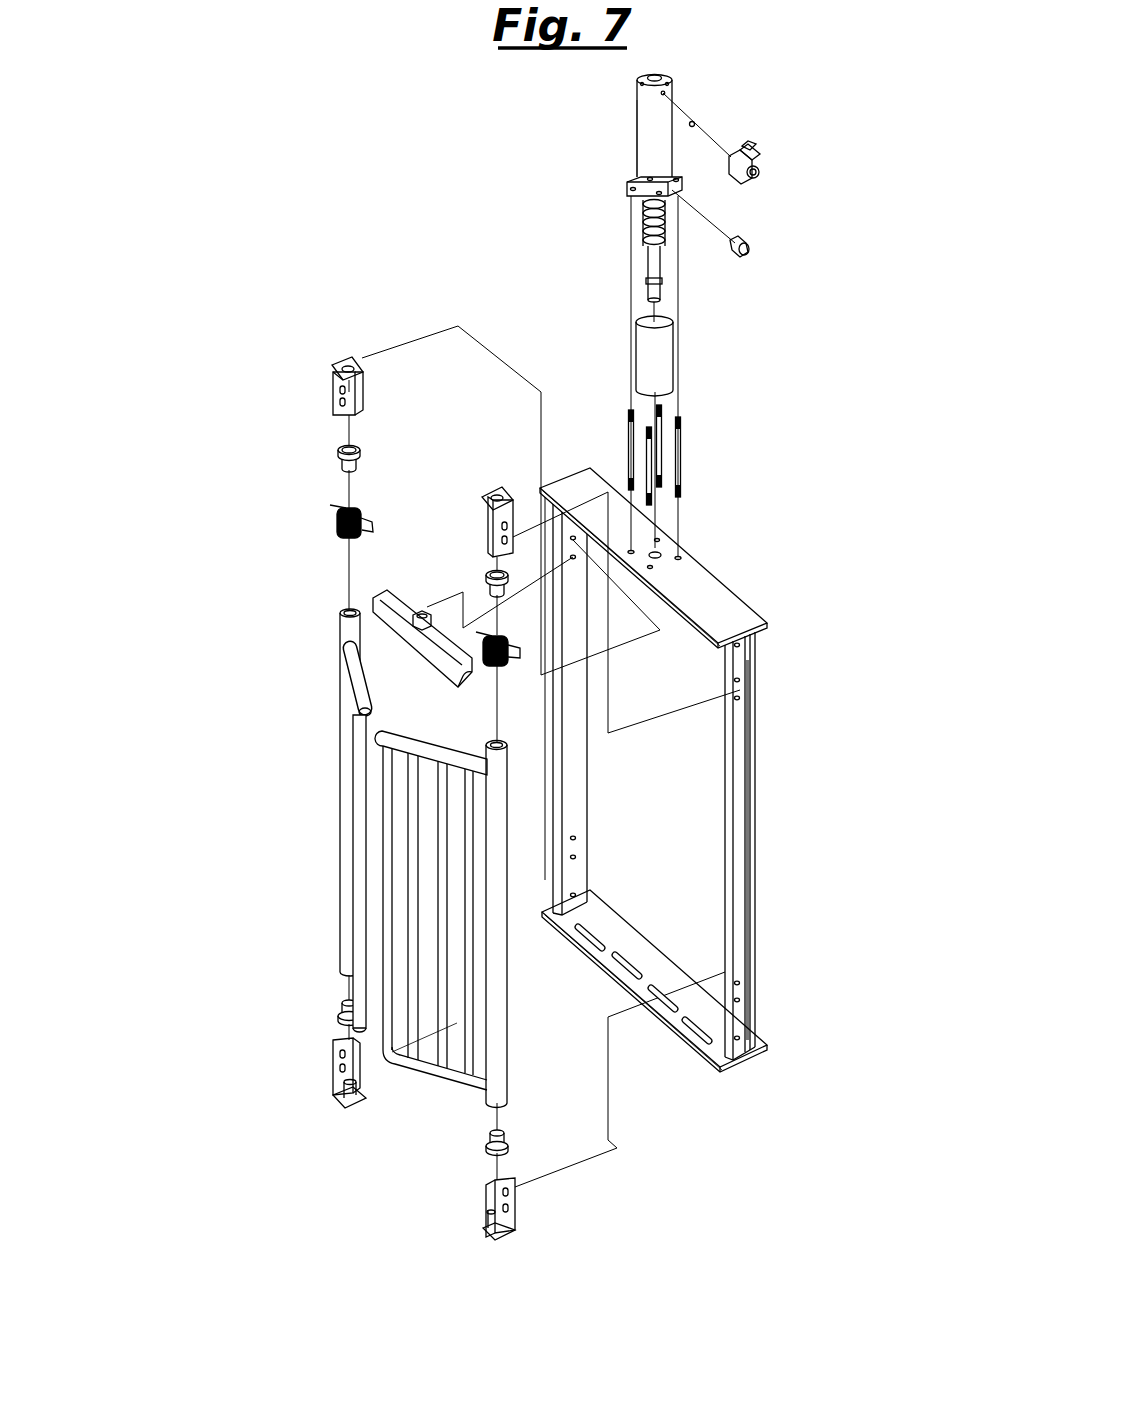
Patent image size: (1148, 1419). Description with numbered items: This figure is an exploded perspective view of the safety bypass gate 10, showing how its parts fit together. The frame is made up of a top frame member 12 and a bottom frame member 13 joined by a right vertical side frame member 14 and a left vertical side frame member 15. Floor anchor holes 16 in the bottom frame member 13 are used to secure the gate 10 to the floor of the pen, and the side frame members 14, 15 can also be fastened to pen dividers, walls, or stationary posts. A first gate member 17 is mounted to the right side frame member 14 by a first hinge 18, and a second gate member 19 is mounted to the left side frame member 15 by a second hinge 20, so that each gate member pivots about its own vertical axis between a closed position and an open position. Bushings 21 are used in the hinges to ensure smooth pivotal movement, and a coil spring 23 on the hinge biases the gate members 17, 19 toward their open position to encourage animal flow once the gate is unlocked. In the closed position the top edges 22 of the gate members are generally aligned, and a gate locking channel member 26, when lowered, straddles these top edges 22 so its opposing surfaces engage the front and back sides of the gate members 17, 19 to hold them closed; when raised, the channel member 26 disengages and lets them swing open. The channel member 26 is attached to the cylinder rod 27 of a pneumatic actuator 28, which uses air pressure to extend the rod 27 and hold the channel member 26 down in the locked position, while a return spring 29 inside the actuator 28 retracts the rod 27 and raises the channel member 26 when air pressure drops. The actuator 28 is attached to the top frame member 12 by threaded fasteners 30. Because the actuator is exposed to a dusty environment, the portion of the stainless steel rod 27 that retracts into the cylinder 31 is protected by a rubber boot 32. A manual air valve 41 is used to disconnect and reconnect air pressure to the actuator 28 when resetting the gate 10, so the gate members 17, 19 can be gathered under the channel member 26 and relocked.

The safety bypass gate 10 is at (375, 285).
The top frame member 12 is at (705, 580).
The bottom frame member 13 is at (645, 945).
The right vertical side frame member 14 is at (577, 790).
The left vertical side frame member 15 is at (745, 690).
The floor anchor holes 16 is at (598, 935).
The first gate member 17 is at (365, 738).
The first hinge 18 is at (337, 368).
The second gate member 19 is at (385, 775).
The second hinge 20 is at (490, 485).
The bushings 21 is at (340, 455).
The top edges 22 is at (437, 748).
The first coil spring 23 is at (337, 522).
The gate locking channel member 26 is at (400, 636).
The cylinder rod 27 is at (653, 272).
The pneumatic actuator 28 is at (650, 152).
The return spring 29 is at (650, 237).
The threaded fasteners 30 is at (680, 450).
The cylinder 31 is at (672, 90).
The rubber boot 32 is at (670, 357).
The manual air valve 41 is at (752, 158).